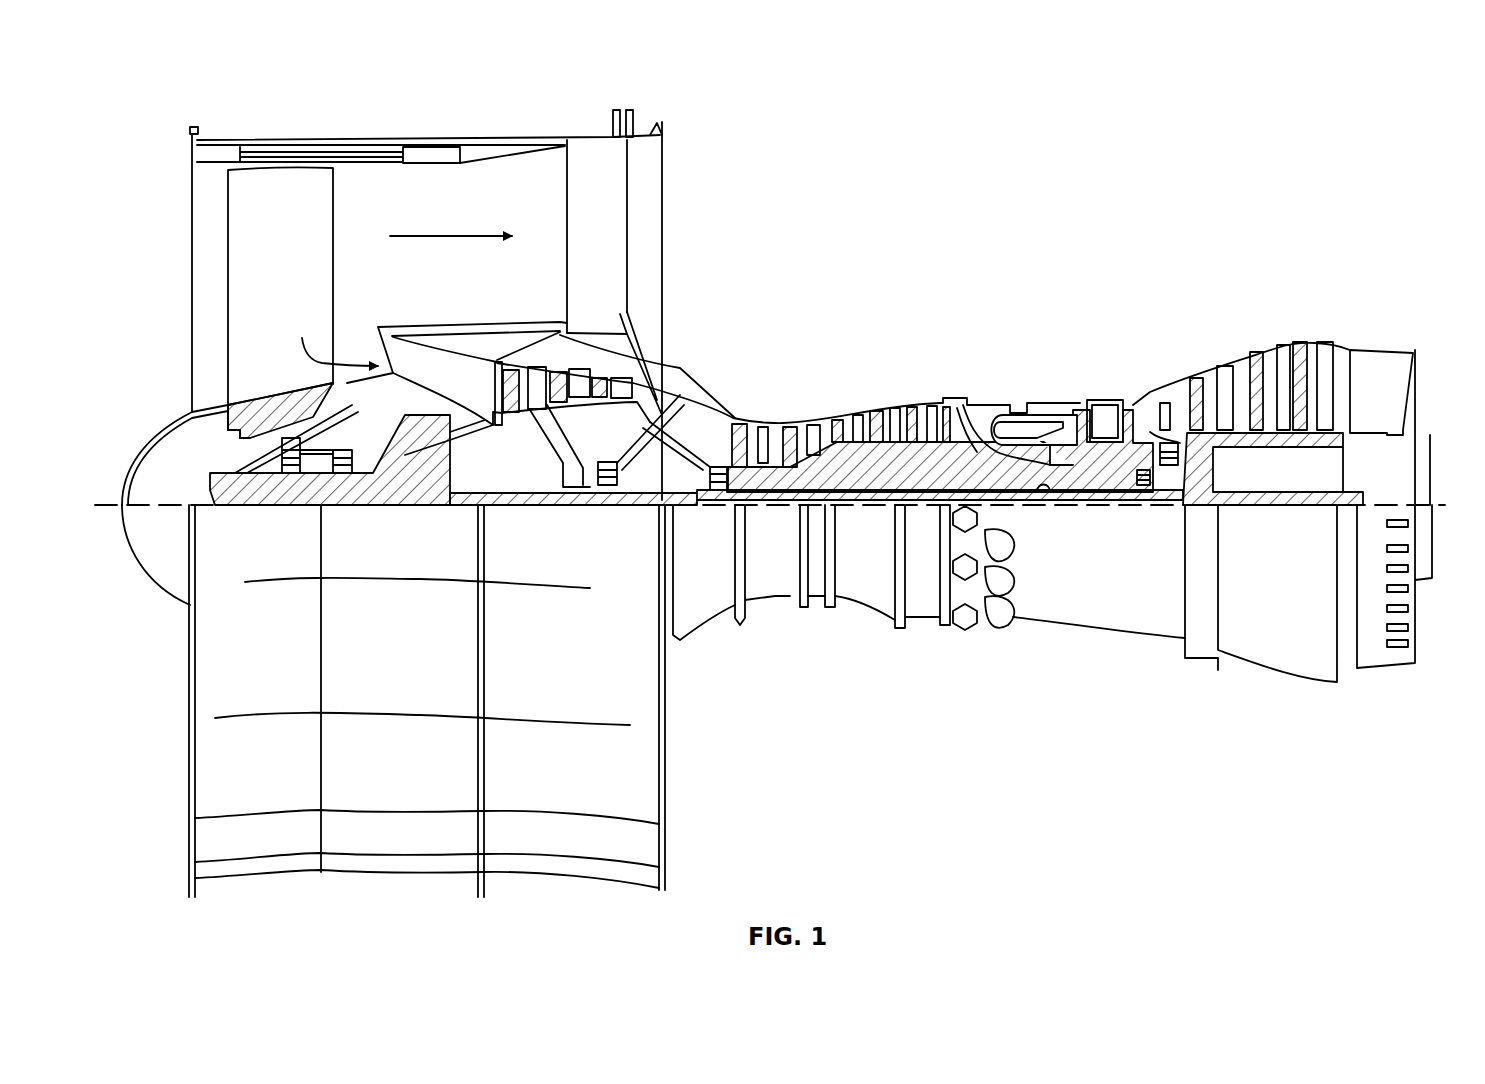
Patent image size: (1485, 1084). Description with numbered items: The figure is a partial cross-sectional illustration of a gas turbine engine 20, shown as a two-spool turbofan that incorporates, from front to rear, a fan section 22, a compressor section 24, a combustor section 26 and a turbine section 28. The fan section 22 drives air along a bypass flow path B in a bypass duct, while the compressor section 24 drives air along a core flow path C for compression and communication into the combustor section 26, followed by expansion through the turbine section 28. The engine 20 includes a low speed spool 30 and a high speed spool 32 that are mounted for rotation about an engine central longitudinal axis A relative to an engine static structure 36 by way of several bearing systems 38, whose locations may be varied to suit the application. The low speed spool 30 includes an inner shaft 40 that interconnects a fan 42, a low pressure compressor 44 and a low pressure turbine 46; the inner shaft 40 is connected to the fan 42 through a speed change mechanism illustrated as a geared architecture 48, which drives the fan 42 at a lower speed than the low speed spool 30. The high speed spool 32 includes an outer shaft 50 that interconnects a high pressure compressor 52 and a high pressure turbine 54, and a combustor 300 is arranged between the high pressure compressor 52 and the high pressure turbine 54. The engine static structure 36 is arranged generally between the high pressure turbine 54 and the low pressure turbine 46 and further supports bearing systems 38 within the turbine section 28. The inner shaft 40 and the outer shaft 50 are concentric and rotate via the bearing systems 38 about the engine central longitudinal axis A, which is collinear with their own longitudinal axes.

The gas turbine engine 20 is at (1236, 175).
The fan section 22 is at (299, 128).
The compressor section 24 is at (940, 392).
The combustor section 26 is at (1040, 391).
The turbine section 28 is at (1275, 432).
The low speed spool 30 is at (886, 510).
The high speed spool 32 is at (958, 410).
The engine static structure 36 is at (925, 627).
The bearing systems 38 is at (298, 470).
The inner shaft 40 is at (677, 503).
The fan 42 is at (308, 268).
The low pressure compressor 44 is at (580, 385).
The low pressure turbine 46 is at (1272, 363).
The geared architecture 48 is at (438, 487).
The outer shaft 50 is at (1045, 500).
The high pressure compressor 52 is at (845, 472).
The high pressure turbine 54 is at (1105, 398).
The combustor 300 is at (1030, 423).
The engine central longitudinal axis A is at (1440, 505).
The bypass flow path B is at (451, 221).
The core flow path C is at (333, 337).